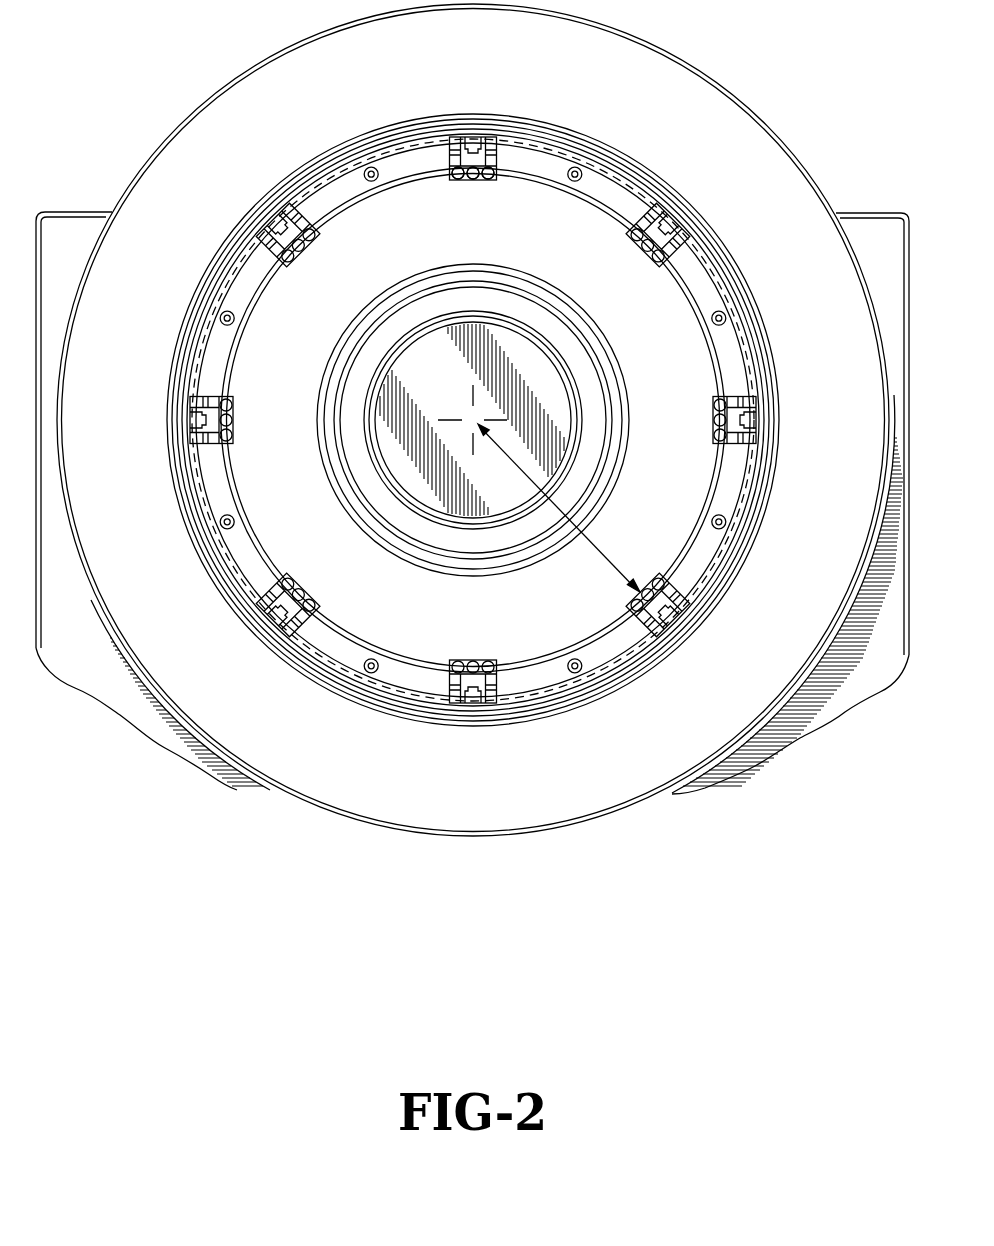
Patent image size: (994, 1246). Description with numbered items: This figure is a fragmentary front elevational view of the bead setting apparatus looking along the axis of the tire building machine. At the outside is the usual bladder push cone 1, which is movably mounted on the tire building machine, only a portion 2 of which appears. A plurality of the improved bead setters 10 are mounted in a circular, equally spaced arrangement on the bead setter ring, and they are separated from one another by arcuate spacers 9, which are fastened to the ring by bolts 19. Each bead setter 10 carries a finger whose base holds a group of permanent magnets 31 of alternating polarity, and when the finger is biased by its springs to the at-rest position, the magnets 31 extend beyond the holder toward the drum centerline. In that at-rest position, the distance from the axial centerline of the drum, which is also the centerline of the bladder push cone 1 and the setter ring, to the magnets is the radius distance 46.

The bladder push cone 1 is at (724, 104).
The portion of tire building machine 2 is at (858, 697).
The arcuate spacers 9 is at (626, 192).
The bead setter 10 is at (489, 191).
The bolts 19 is at (578, 168).
The permanent magnets 31 is at (458, 181).
The radius distance 46 is at (604, 551).